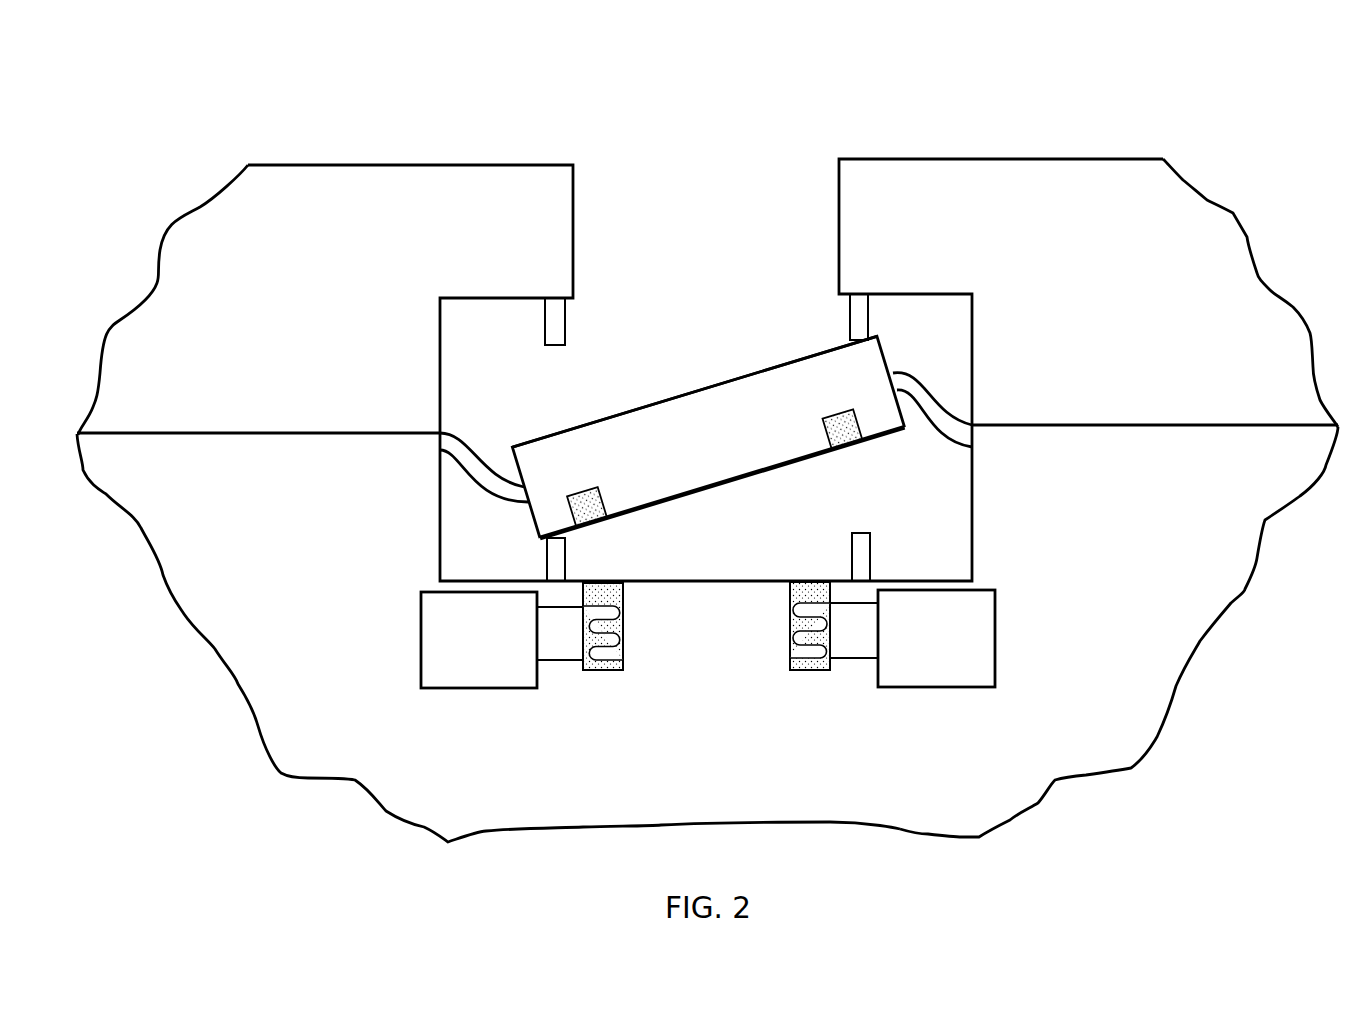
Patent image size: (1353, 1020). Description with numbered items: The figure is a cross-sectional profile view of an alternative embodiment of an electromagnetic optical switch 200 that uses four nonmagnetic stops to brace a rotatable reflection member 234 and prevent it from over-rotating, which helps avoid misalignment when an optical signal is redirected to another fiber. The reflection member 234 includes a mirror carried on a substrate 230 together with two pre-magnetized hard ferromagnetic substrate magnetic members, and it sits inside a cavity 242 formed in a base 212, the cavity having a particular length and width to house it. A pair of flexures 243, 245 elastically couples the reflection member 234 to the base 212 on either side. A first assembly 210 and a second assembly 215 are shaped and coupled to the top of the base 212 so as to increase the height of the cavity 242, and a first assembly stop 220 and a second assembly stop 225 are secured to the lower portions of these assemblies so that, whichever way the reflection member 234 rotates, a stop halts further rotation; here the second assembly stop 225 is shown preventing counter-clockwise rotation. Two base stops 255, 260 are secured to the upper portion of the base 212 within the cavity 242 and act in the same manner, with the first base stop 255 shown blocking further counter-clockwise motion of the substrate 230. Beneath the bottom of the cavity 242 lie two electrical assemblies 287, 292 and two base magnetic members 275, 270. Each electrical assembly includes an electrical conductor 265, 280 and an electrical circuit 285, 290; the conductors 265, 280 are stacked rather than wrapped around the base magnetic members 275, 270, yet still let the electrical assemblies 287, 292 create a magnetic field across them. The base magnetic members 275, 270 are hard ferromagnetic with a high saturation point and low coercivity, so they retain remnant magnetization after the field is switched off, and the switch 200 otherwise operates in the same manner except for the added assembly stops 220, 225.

The electromagnetic optical switch 200 is at (487, 100).
The first assembly 210 is at (358, 193).
The base 212 is at (350, 512).
The second assembly 215 is at (997, 188).
The first assembly stop 220 is at (567, 320).
The second assembly stop 225 is at (848, 318).
The substrate 230 is at (708, 437).
The reflection member 234 is at (657, 307).
The cavity 242 is at (768, 536).
The flexure 243 is at (903, 372).
The flexure 245 is at (517, 499).
The first base stop 255 is at (565, 573).
The second base stop 260 is at (858, 565).
The electrical conductor 265 is at (635, 659).
The base magnetic member 270 is at (803, 592).
The base magnetic member 275 is at (628, 596).
The electrical conductor 280 is at (790, 658).
The electrical circuit 285 is at (472, 663).
The electrical assembly 287 is at (558, 692).
The electrical circuit 290 is at (938, 642).
The electrical assembly 292 is at (862, 683).